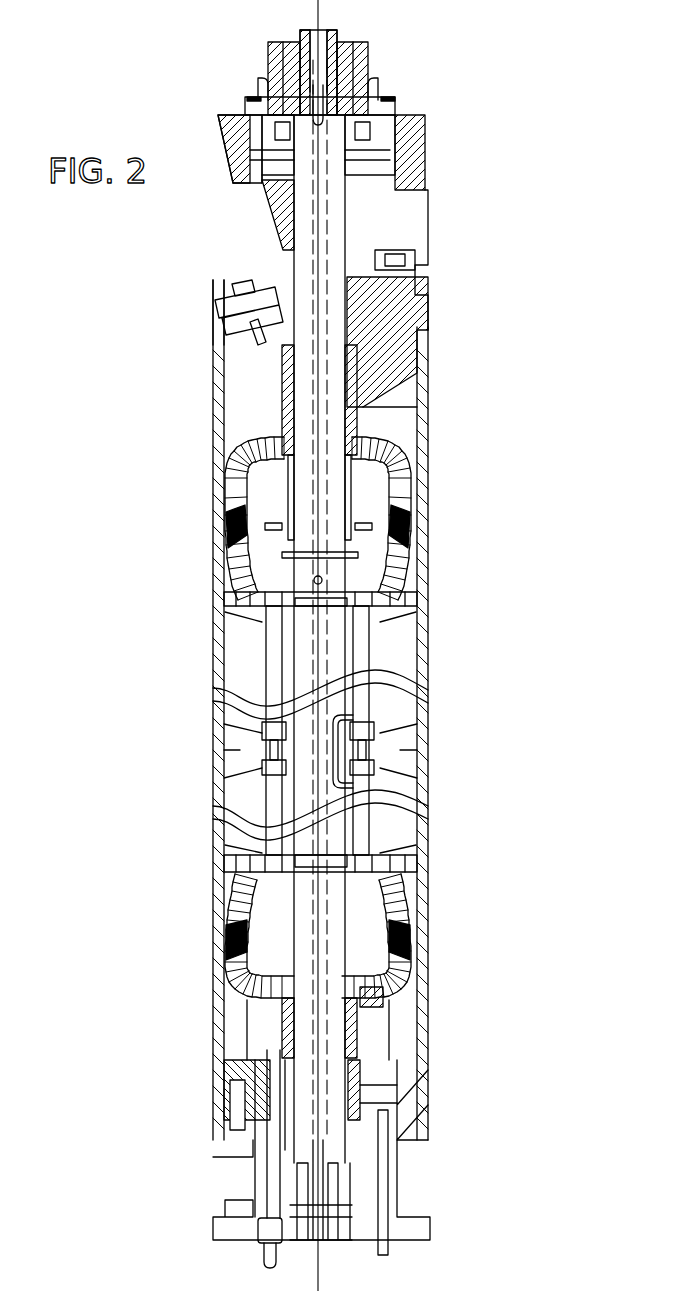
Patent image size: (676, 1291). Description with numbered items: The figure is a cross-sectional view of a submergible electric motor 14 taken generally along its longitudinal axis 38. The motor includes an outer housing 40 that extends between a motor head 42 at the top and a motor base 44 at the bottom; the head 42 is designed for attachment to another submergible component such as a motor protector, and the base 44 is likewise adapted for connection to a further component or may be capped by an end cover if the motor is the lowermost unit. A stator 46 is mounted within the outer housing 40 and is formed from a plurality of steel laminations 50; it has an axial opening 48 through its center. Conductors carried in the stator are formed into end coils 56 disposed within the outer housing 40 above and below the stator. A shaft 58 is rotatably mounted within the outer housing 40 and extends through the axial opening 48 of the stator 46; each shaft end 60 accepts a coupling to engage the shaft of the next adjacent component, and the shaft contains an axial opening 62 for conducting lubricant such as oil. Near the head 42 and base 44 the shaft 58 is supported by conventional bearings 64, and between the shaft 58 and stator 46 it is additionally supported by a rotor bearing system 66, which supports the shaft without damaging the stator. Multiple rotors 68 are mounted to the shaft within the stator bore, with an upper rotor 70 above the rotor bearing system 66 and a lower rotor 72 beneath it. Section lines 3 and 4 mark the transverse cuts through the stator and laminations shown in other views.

The submergible electric motor 14 is at (455, 591).
The longitudinal axis 38 is at (318, 4).
The outer housing 40 is at (428, 395).
The motor head 42 is at (428, 207).
The motor base 44 is at (441, 1131).
The stator 46 is at (413, 655).
The axial opening 48 is at (262, 680).
The laminations 50 is at (252, 610).
The end coils 56 is at (418, 526).
The shaft 58 is at (338, 305).
The shaft end 60 is at (337, 34).
The axial opening of shaft 62 is at (338, 72).
The bearings 64 is at (348, 492).
The rotor bearing system 66 is at (420, 692).
The rotors 68 is at (371, 584).
The upper rotor 70 is at (294, 716).
The lower rotor 72 is at (290, 828).
The section line 3- 3 is at (172, 750).
The section line 4- 4 is at (390, 747).